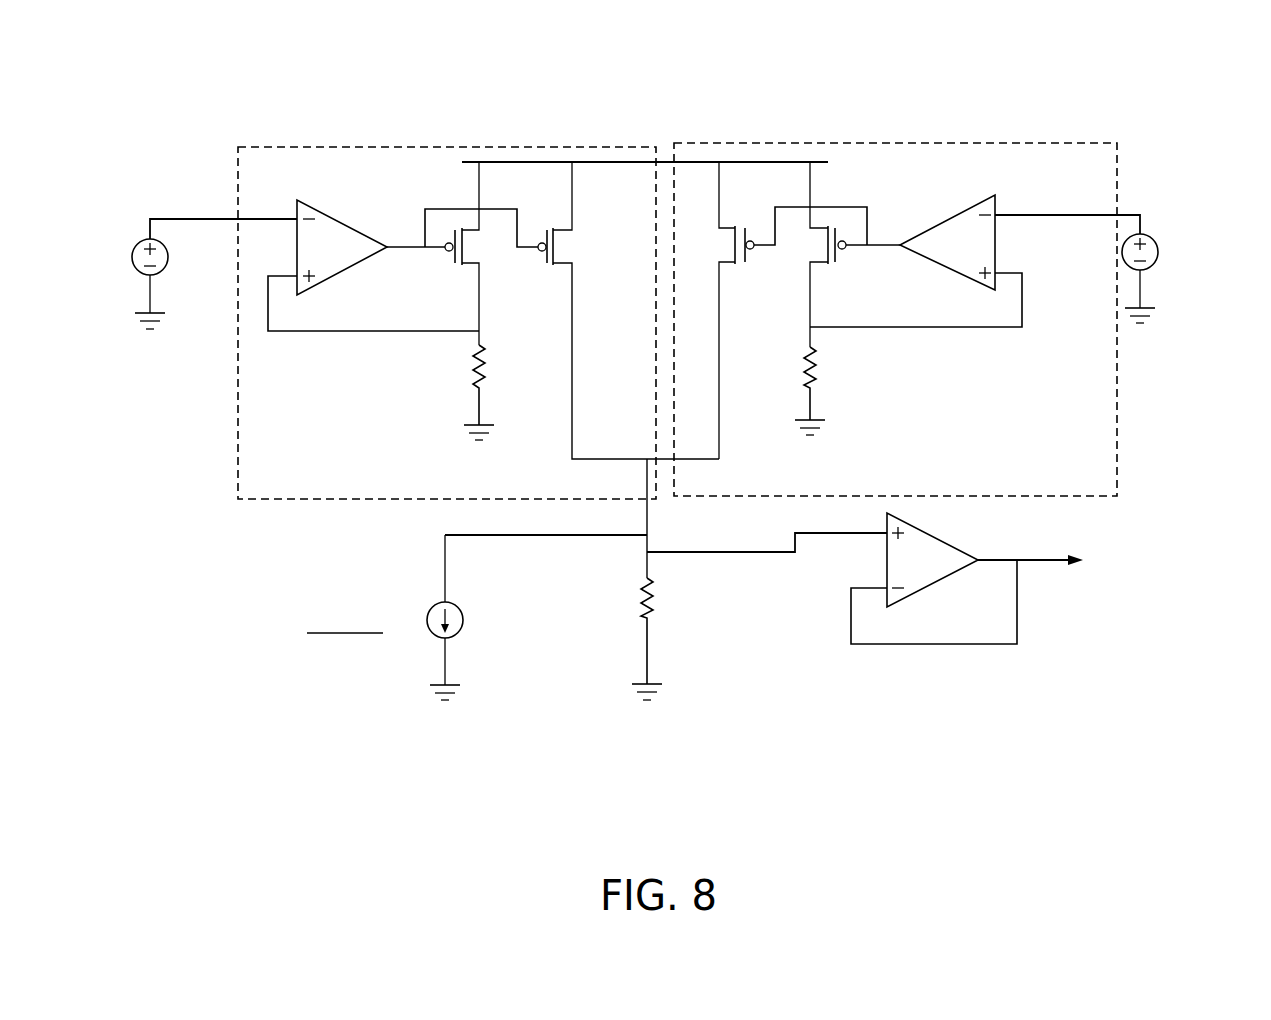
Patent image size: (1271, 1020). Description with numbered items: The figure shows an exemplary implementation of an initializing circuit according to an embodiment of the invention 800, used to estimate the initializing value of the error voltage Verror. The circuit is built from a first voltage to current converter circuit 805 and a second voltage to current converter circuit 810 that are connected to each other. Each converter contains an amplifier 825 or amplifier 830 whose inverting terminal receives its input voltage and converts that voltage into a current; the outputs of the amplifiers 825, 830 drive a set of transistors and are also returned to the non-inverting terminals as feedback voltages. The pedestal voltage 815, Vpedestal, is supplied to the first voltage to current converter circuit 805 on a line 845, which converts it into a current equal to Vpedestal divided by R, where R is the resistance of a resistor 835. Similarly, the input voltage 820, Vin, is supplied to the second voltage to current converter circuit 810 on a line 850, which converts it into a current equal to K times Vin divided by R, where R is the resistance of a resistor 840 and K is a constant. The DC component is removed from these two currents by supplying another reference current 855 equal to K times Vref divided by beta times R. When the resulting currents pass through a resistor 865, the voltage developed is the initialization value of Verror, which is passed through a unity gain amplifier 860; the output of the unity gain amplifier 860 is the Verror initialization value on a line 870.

The embodiment of the invention 800 is at (250, 125).
The first voltage to current converter circuit 805 is at (435, 147).
The second voltage to current converter circuit 810 is at (895, 142).
The pedestal voltage 815 is at (168, 265).
The input voltage 820 is at (1160, 253).
The amplifier 825 is at (335, 223).
The amplifier 830 is at (997, 200).
The resistor 835 is at (490, 350).
The resistor 840 is at (803, 365).
The line 845 is at (238, 219).
The line 850 is at (1110, 215).
The reference current 855 is at (460, 607).
The unity gain amplifier 860 is at (930, 530).
The resistor 865 is at (640, 610).
The line 870 is at (1052, 562).